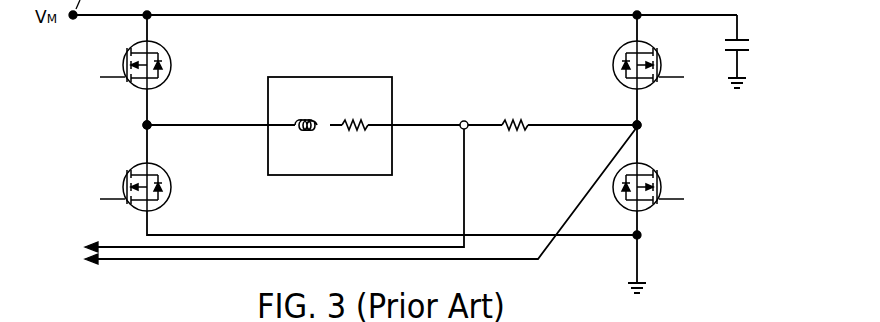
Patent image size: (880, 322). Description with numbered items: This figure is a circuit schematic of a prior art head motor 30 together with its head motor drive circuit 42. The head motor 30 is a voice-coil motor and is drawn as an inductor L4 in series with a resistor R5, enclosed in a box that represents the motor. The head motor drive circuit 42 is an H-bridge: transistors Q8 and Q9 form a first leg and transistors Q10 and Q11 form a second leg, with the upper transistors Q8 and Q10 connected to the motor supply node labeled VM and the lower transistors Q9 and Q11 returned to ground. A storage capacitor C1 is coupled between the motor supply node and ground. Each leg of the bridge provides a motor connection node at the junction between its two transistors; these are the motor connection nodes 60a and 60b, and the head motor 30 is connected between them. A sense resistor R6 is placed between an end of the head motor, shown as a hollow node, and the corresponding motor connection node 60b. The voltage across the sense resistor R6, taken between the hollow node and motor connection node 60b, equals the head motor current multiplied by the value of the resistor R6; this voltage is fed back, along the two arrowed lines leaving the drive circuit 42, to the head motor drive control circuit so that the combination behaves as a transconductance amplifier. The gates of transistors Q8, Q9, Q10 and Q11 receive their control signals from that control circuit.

The head motor 30 is at (351, 77).
The motor connection node 60a is at (153, 120).
The motor connection node 60b is at (642, 126).
The head motor drive circuit 42 is at (194, 276).
The transistor Q8 is at (149, 65).
The transistor Q9 is at (149, 187).
The transistor Q10 is at (657, 65).
The transistor Q11 is at (657, 187).
The storage capacitor C1 is at (746, 51).
The inductor L4 is at (309, 111).
The resistor R5 is at (354, 111).
The sense resistor R6 is at (514, 111).